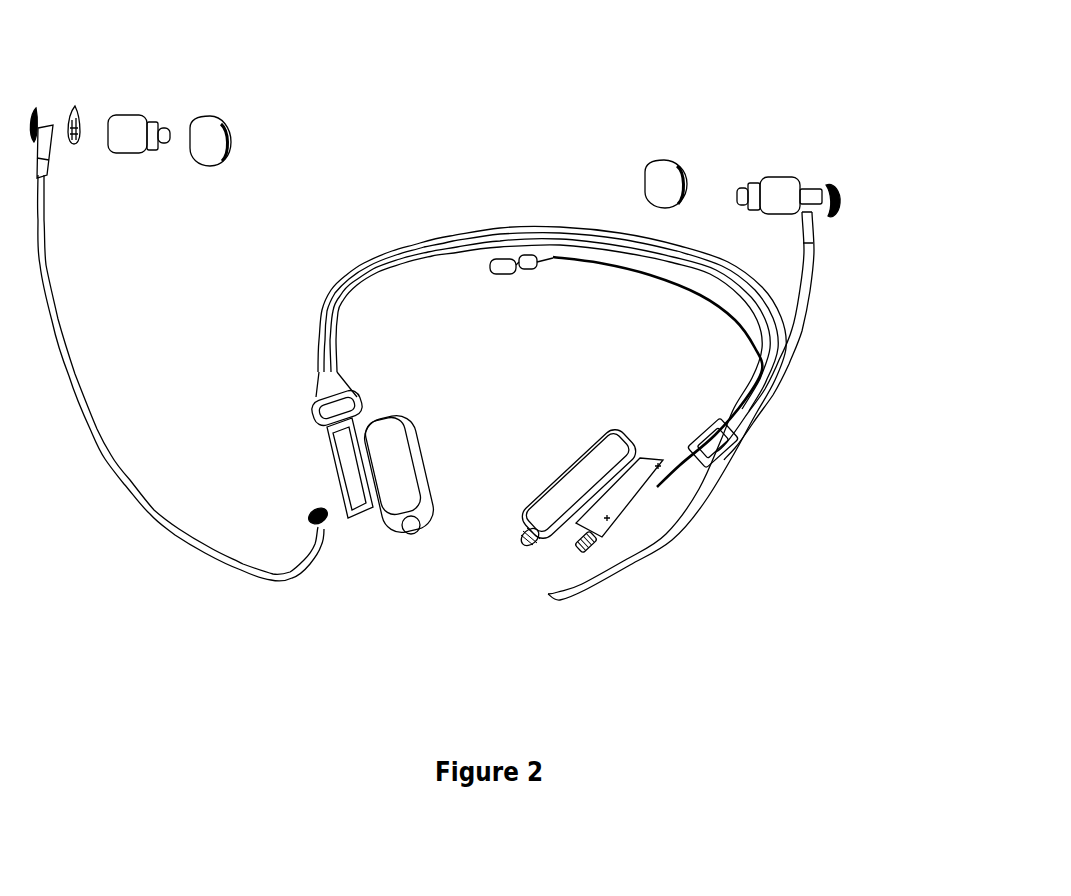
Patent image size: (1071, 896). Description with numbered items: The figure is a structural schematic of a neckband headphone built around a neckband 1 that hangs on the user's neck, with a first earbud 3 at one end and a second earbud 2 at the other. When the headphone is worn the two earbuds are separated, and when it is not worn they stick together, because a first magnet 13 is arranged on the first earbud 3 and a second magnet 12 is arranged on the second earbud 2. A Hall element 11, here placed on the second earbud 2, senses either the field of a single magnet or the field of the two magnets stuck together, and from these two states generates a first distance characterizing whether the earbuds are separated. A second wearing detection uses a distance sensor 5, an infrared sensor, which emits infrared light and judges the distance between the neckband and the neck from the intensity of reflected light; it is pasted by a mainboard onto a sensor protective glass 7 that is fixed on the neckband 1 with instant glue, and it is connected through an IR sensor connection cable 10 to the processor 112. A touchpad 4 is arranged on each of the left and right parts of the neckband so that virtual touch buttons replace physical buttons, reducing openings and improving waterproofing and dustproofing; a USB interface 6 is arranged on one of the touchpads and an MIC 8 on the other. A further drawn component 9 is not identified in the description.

The neckband 1 is at (551, 347).
The second earbud 2 is at (815, 154).
The first earbud 3 is at (169, 98).
The touchpad 4 is at (443, 465).
The distance sensor 5 is at (570, 287).
The USB interface 6 is at (594, 470).
The sensor protective glass 7 is at (554, 309).
The MIC 8 is at (440, 433).
The left battery pod 9 is at (392, 496).
The IR sensor connection cable 10 is at (710, 372).
The Hall element 11 is at (874, 163).
The second magnet 12 is at (881, 191).
The first magnet 13 is at (117, 78).
The processor 112 is at (666, 517).